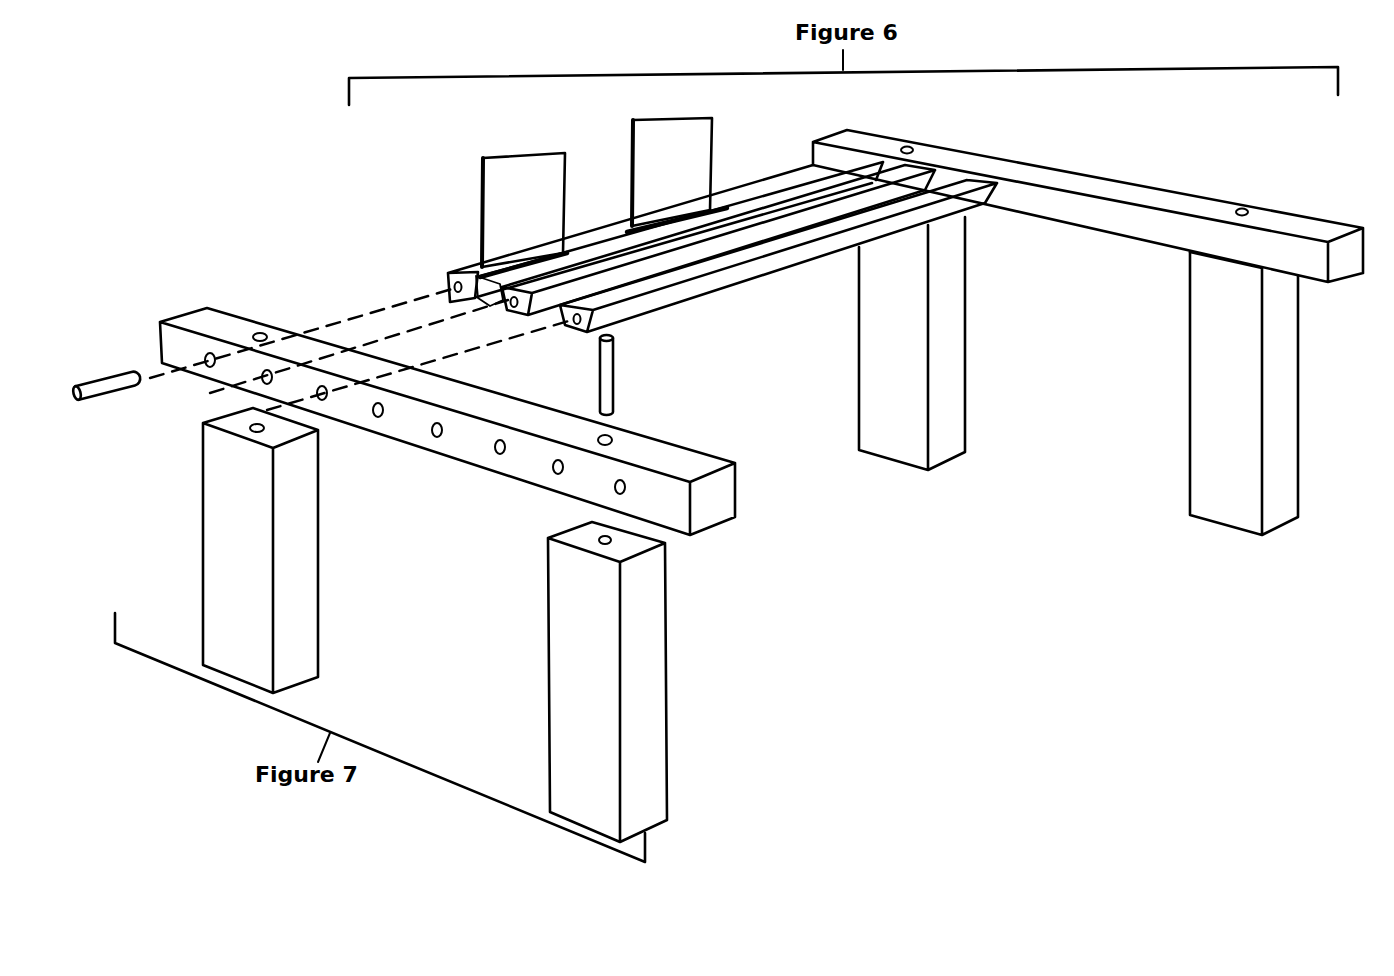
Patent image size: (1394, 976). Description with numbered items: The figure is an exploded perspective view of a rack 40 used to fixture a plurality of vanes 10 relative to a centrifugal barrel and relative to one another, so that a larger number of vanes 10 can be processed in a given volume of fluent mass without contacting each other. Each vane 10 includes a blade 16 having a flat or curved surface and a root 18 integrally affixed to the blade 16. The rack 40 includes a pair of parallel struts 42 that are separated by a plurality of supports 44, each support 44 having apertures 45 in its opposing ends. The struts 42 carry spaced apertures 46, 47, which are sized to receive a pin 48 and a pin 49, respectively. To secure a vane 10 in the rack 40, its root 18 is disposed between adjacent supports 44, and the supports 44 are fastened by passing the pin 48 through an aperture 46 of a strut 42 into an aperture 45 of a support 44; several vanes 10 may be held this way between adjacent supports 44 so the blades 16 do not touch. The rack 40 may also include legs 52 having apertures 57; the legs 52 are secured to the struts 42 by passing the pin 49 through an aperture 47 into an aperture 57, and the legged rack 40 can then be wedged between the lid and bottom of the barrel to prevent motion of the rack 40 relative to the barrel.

In FIG. 6, the vane 10 is at (476, 163).
In FIG. 6, the blade 16 is at (697, 147).
In FIG. 6, the root 18 is at (487, 297).
In FIG. 6, the rack 40 is at (1323, 230).
In FIG. 6, the struts 42 is at (1198, 242).
In FIG. 7, the struts 42 is at (505, 405).
In FIG. 6, the supports 44 is at (967, 208).
In FIG. 6, the apertures 45 is at (574, 322).
In FIG. 7, the apertures 46 is at (435, 435).
In FIG. 6, the apertures 47 is at (1240, 208).
In FIG. 7, the apertures 47 is at (612, 437).
In FIG. 7, the pin 48 is at (132, 383).
In FIG. 7, the pin 49 is at (610, 372).
In FIG. 6, the legs 52 is at (1245, 498).
In FIG. 7, the legs 52 is at (650, 627).
In FIG. 7, the apertures 57 is at (610, 545).